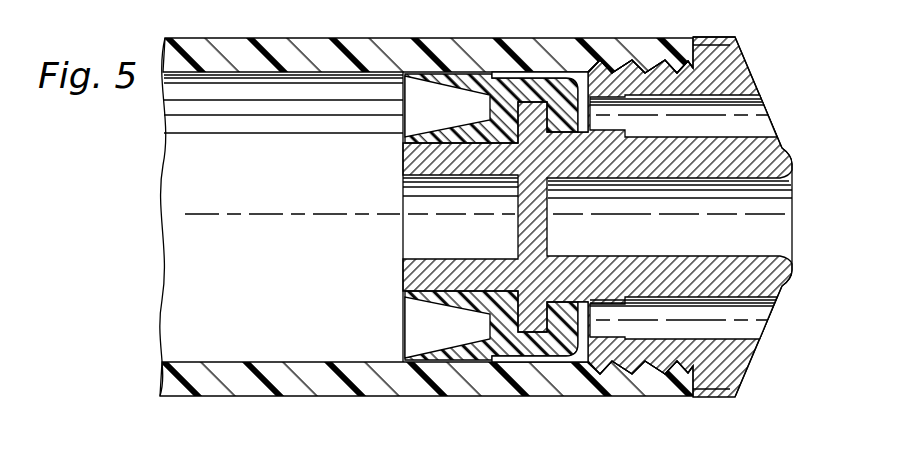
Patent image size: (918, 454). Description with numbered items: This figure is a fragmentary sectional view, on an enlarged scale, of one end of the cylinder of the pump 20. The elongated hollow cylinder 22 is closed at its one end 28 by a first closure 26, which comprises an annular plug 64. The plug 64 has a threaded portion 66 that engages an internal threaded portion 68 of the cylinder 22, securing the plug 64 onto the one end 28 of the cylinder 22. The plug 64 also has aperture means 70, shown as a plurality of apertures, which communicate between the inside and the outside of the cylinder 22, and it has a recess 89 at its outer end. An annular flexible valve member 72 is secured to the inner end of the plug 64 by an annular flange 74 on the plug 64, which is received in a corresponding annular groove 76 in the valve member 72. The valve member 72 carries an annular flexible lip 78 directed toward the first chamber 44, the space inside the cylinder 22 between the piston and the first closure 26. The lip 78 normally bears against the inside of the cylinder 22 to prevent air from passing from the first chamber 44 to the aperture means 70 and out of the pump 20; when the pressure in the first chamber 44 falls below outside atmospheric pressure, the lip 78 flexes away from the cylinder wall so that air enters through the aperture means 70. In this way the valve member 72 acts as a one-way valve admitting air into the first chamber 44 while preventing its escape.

The pump 20 is at (206, 36).
The cylinder 22 is at (278, 38).
The one end of the cylinder 28 is at (357, 38).
The first chamber 44 is at (243, 266).
The valve member 72 is at (497, 76).
The first closure 26 is at (765, 62).
The annular plug 64 is at (786, 158).
The internal threaded portion 68 is at (607, 62).
The threaded portion 66 is at (689, 63).
The annular flange 74 is at (528, 332).
The annular groove 76 is at (549, 335).
The annular flexible lip 78 is at (448, 89).
The aperture means 70 is at (608, 120).
The recess 89 is at (745, 249).